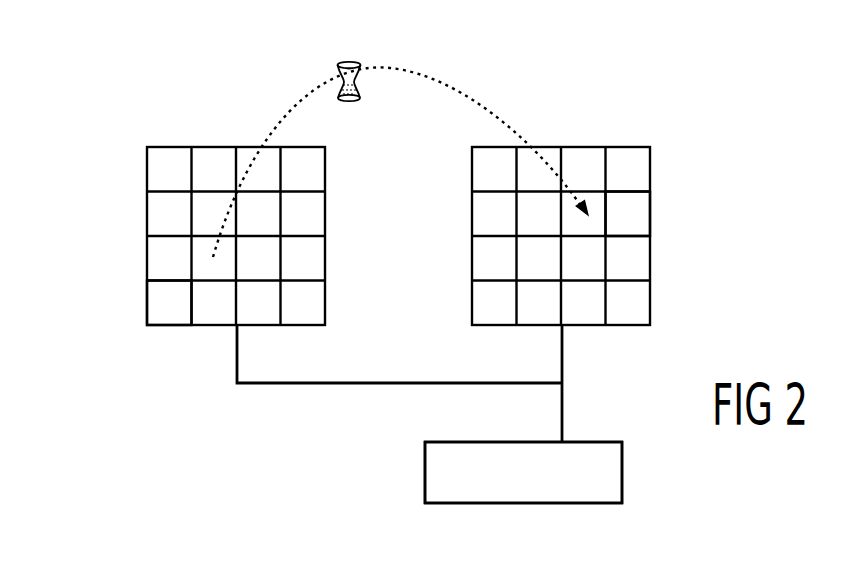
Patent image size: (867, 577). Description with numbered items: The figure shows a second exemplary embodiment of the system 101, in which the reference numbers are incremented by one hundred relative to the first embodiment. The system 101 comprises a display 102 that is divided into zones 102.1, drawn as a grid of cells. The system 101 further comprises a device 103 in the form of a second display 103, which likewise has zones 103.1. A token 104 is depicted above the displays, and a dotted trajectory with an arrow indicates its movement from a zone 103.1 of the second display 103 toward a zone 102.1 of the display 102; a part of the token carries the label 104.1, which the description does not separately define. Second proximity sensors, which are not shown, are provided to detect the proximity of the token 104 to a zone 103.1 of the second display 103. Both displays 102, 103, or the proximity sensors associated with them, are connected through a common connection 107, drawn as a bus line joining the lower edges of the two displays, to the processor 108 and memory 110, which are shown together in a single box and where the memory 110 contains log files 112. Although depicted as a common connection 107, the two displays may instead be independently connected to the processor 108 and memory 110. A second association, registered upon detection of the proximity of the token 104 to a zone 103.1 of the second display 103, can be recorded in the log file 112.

The system 101 is at (314, 434).
The display 102 is at (644, 120).
The zones 102.1 is at (630, 222).
The second display 103 is at (204, 96).
The zones 103.1 is at (167, 295).
The token 104 is at (355, 64).
The object image 104.1 is at (360, 90).
The connection 107 is at (394, 380).
The processor 108 is at (490, 490).
The memory 110 is at (550, 490).
The log files 112 is at (608, 490).